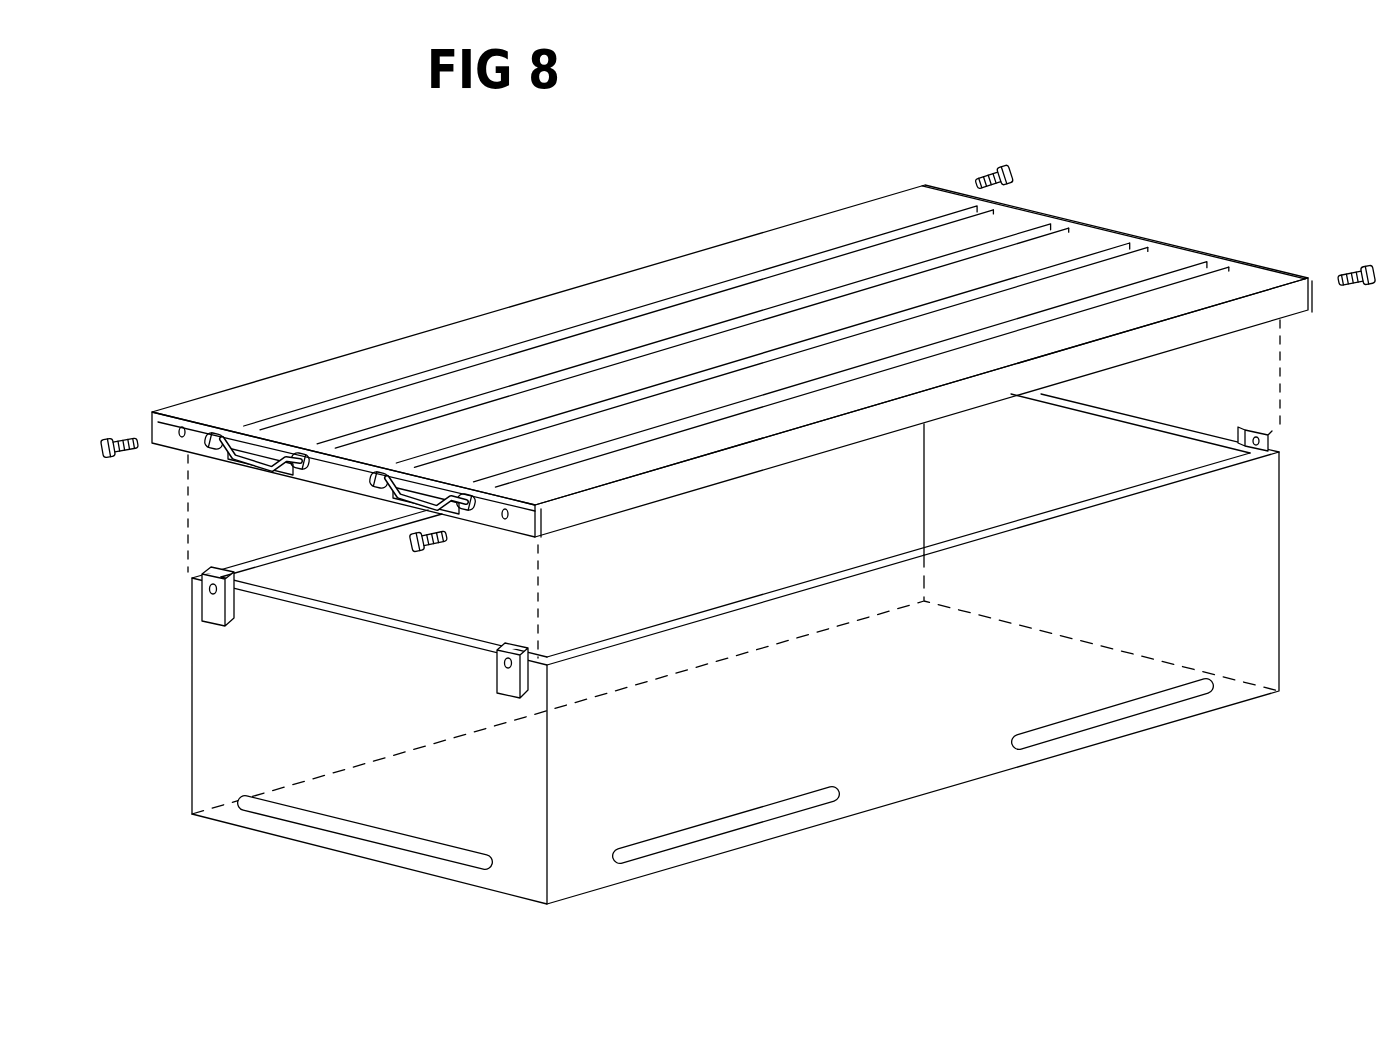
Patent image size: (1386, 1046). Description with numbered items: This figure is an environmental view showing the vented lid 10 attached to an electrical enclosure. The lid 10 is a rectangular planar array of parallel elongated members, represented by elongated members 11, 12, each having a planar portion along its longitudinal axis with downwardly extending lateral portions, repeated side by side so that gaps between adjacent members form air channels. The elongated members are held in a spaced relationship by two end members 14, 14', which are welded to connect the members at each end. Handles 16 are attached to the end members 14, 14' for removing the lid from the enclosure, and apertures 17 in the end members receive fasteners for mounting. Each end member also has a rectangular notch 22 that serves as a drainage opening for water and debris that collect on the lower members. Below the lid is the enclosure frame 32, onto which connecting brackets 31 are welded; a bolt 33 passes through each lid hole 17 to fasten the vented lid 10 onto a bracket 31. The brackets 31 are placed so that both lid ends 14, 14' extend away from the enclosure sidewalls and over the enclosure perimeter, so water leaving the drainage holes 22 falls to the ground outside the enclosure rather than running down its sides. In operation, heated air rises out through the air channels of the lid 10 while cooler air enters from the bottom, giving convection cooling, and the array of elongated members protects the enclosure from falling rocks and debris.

The vented lid 10 is at (606, 257).
The elongated member 11 is at (1153, 265).
The elongated member 12 is at (1076, 252).
The end member 14 is at (319, 436).
The end member 14' is at (923, 361).
The handle 16 is at (264, 476).
The aperture 17 is at (180, 439).
The rectangular notch 22 is at (330, 482).
The connecting bracket 31 is at (210, 603).
The enclosure frame 32 is at (232, 698).
The bolt 33 is at (1017, 170).